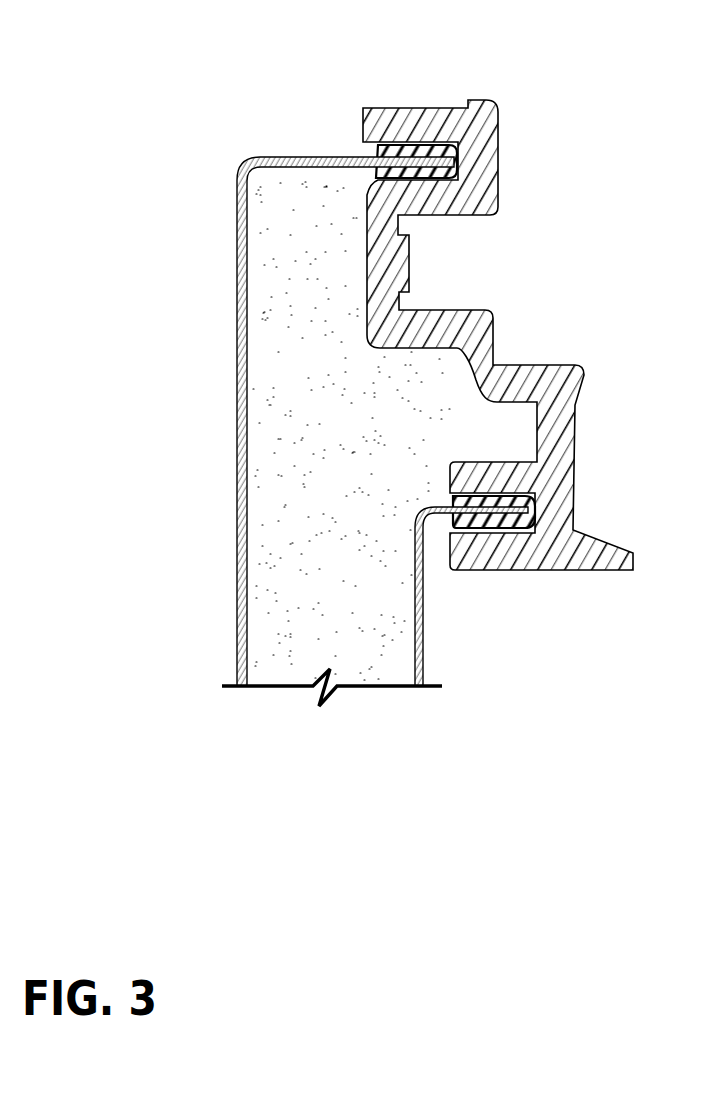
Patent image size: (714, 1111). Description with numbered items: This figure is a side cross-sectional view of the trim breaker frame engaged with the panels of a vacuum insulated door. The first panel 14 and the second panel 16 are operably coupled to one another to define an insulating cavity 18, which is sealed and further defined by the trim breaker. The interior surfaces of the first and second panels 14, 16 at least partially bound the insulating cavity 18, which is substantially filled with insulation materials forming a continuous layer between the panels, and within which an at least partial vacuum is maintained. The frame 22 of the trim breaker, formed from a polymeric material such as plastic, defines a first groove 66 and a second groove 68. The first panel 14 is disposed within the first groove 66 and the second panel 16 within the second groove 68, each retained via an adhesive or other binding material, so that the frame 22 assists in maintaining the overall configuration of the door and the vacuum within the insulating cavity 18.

The first panel 14 is at (423, 642).
The second panel 16 is at (238, 482).
The insulating cavity 18 is at (325, 395).
The frame 22 is at (545, 367).
The first groove 66 is at (532, 512).
The second groove 68 is at (441, 147).